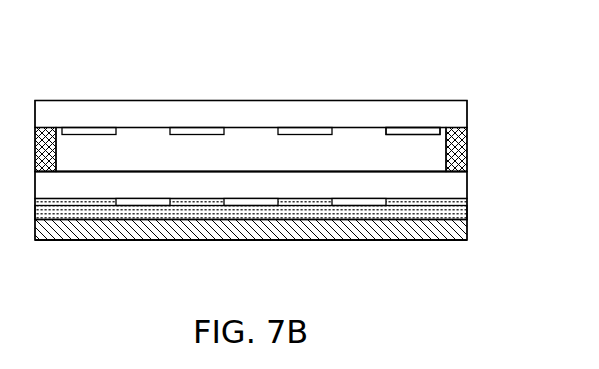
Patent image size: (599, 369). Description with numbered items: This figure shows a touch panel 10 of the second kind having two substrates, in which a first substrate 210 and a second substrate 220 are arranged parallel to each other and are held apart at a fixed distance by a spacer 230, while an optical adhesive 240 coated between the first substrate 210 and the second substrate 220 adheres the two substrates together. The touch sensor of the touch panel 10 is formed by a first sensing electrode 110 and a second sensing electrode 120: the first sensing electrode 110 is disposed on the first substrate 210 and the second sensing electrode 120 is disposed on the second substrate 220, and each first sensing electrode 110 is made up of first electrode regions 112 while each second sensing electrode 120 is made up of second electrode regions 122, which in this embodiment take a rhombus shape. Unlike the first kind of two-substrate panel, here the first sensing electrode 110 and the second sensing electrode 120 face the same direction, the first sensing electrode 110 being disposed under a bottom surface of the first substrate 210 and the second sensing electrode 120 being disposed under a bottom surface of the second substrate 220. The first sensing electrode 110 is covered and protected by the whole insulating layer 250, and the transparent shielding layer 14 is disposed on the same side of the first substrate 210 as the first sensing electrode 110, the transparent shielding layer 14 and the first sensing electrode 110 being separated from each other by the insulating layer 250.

The touch panel 10 is at (562, 45).
The transparent shielding layer 14 is at (467, 234).
The first sensing electrode 110 is at (390, 203).
The first electrode region 112 is at (358, 205).
The second sensing electrode 120 is at (444, 130).
The second electrode region 122 is at (404, 128).
The first substrate 210 is at (462, 183).
The second substrate 220 is at (467, 102).
The spacer 230 is at (467, 146).
The optical adhesive 240 is at (249, 138).
The insulating layer 250 is at (292, 210).